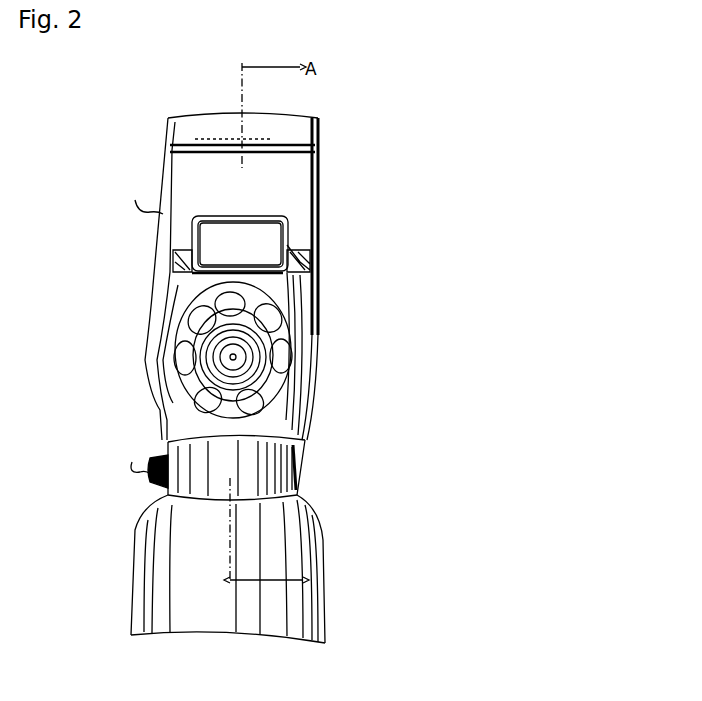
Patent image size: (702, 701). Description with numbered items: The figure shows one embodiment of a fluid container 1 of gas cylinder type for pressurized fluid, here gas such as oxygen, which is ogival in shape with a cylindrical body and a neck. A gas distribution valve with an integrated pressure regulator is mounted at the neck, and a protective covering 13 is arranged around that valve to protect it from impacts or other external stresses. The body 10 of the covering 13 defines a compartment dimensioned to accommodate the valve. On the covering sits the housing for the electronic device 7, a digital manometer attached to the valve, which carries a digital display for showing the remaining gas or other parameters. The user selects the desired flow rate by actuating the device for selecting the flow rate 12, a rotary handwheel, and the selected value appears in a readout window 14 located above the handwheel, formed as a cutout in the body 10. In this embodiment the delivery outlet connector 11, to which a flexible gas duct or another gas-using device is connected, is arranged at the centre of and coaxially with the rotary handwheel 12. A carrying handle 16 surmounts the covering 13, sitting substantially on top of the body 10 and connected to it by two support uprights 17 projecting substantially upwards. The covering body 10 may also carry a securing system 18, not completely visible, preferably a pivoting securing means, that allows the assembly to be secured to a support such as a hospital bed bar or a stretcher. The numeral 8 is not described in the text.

The fluid container 1 is at (325, 542).
The electronic device 7 is at (192, 217).
The window 8 is at (250, 240).
The body 10 is at (318, 390).
The delivery outlet connector 11 is at (150, 363).
The device for selecting the flow rate 12 is at (305, 354).
The protective covering 13 is at (305, 437).
The readout window 14 is at (247, 294).
The carrying handle 16 is at (296, 131).
The support upright 17 is at (130, 191).
The securing system 18 is at (134, 463).